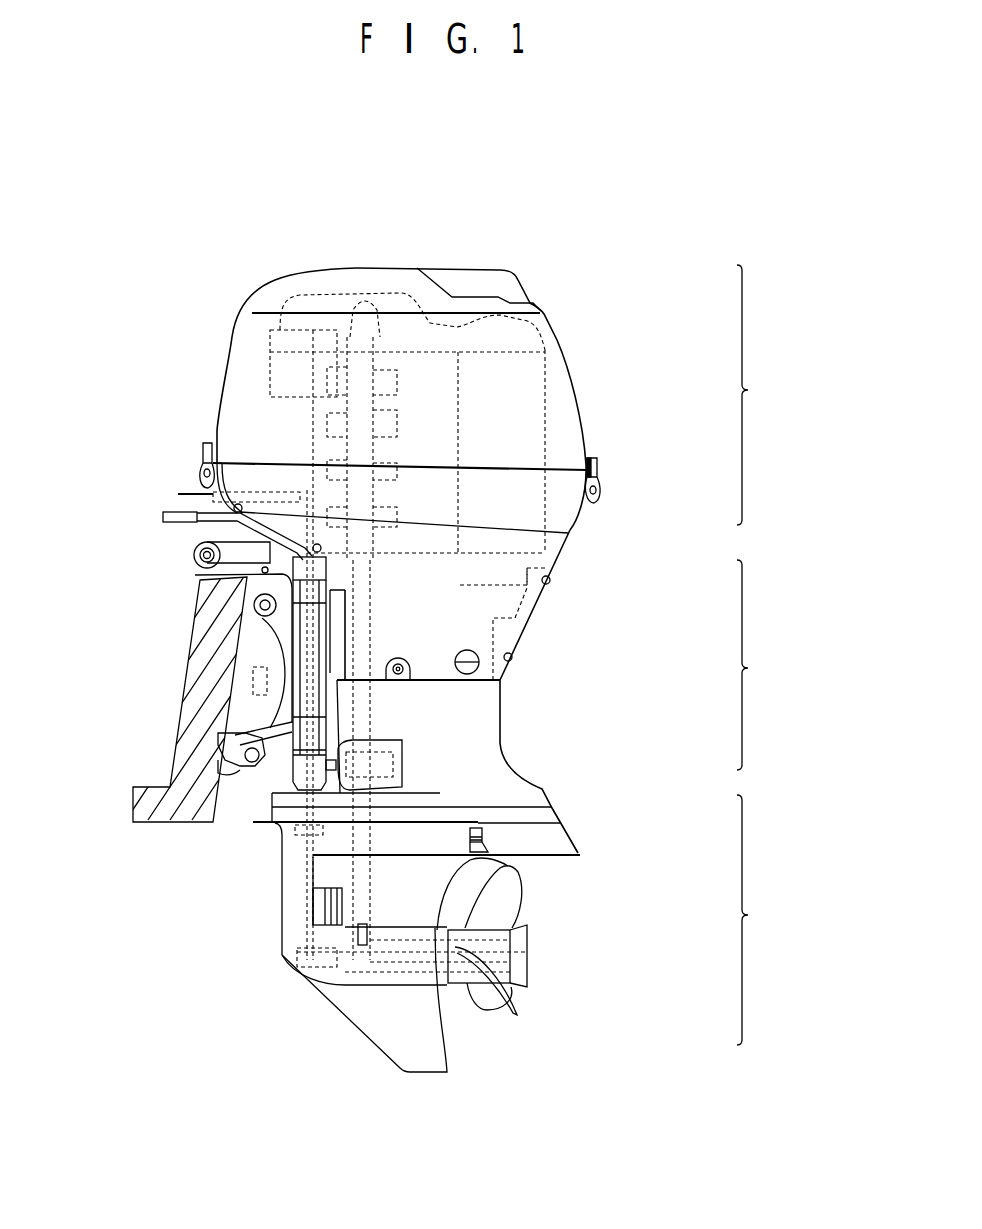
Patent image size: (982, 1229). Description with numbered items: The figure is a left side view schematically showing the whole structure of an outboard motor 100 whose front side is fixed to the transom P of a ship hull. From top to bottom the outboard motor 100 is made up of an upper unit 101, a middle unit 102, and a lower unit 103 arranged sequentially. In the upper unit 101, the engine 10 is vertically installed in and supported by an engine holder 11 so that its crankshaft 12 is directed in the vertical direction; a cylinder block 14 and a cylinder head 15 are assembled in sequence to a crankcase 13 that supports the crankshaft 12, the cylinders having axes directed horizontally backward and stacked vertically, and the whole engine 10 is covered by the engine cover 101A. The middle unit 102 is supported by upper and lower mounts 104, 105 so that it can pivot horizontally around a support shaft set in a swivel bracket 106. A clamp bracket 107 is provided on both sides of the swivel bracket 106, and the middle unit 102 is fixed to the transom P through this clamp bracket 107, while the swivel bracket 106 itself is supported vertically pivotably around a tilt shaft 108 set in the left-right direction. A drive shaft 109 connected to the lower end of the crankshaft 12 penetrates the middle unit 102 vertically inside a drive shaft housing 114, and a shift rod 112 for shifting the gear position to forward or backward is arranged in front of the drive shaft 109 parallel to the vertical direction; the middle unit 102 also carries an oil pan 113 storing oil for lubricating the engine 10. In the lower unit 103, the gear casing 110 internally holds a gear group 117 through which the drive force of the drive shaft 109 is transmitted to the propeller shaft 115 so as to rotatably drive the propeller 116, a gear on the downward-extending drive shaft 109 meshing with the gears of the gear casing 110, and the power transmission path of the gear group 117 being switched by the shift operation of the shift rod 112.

The outboard motor 100 is at (544, 284).
The engine 10 is at (550, 405).
The engine holder 11 is at (550, 577).
The crankshaft 12 is at (350, 427).
The crankcase 13 is at (282, 365).
The cylinder block 14 is at (414, 352).
The cylinder head 15 is at (540, 448).
The upper unit 101 is at (769, 395).
The engine cover 101A is at (582, 413).
The middle unit 102 is at (769, 665).
The lower unit 103 is at (769, 920).
The upper mount 104 is at (372, 578).
The lower mount 105 is at (383, 750).
The swivel bracket 106 is at (250, 587).
The clamp bracket 107 is at (253, 643).
The tilt shaft 108 is at (205, 555).
The drive shaft 109 is at (373, 677).
The gear casing 110 is at (287, 948).
The shift rod 112 is at (313, 920).
The oil pan 113 is at (530, 601).
The drive shaft housing 114 is at (500, 720).
The propeller shaft 115 is at (433, 960).
The propeller 116 is at (517, 903).
The gear group 117 is at (343, 977).
The transom P is at (192, 693).